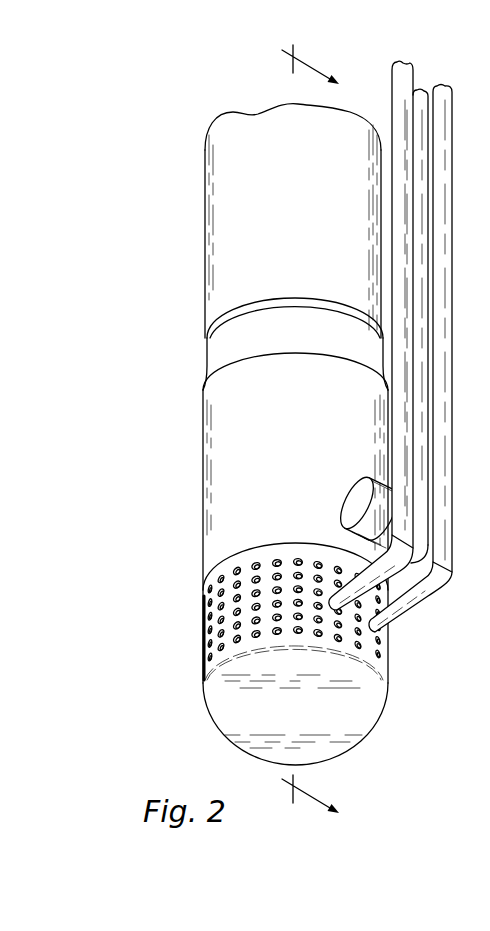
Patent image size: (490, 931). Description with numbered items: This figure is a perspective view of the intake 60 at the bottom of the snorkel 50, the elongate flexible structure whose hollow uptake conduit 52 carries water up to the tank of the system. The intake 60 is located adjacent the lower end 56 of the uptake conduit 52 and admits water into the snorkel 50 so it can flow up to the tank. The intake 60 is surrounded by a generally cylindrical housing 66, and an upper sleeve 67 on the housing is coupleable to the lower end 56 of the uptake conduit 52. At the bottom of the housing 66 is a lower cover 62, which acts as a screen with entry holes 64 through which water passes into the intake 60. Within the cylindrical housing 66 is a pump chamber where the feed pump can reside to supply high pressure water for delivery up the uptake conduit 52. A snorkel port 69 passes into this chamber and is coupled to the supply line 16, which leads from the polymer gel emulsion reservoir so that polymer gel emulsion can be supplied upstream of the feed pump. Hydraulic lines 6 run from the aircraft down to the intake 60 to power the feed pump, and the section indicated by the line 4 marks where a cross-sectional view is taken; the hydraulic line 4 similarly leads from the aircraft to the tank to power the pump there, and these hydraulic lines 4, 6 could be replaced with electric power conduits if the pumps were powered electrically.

The snorkel 50 is at (186, 152).
The uptake conduit 52 is at (286, 160).
The lower end 56 is at (214, 316).
The upper sleeve 67 is at (285, 322).
The cylindrical housing 66 is at (280, 431).
The intake 60 is at (181, 636).
The entry holes 64 is at (297, 557).
The lower cover 62 is at (220, 738).
The snorkel port 69 is at (354, 494).
The supply line 16 is at (418, 213).
The hydraulic lines 6 is at (397, 578).
The hydraulic line 4 is at (319, 436).